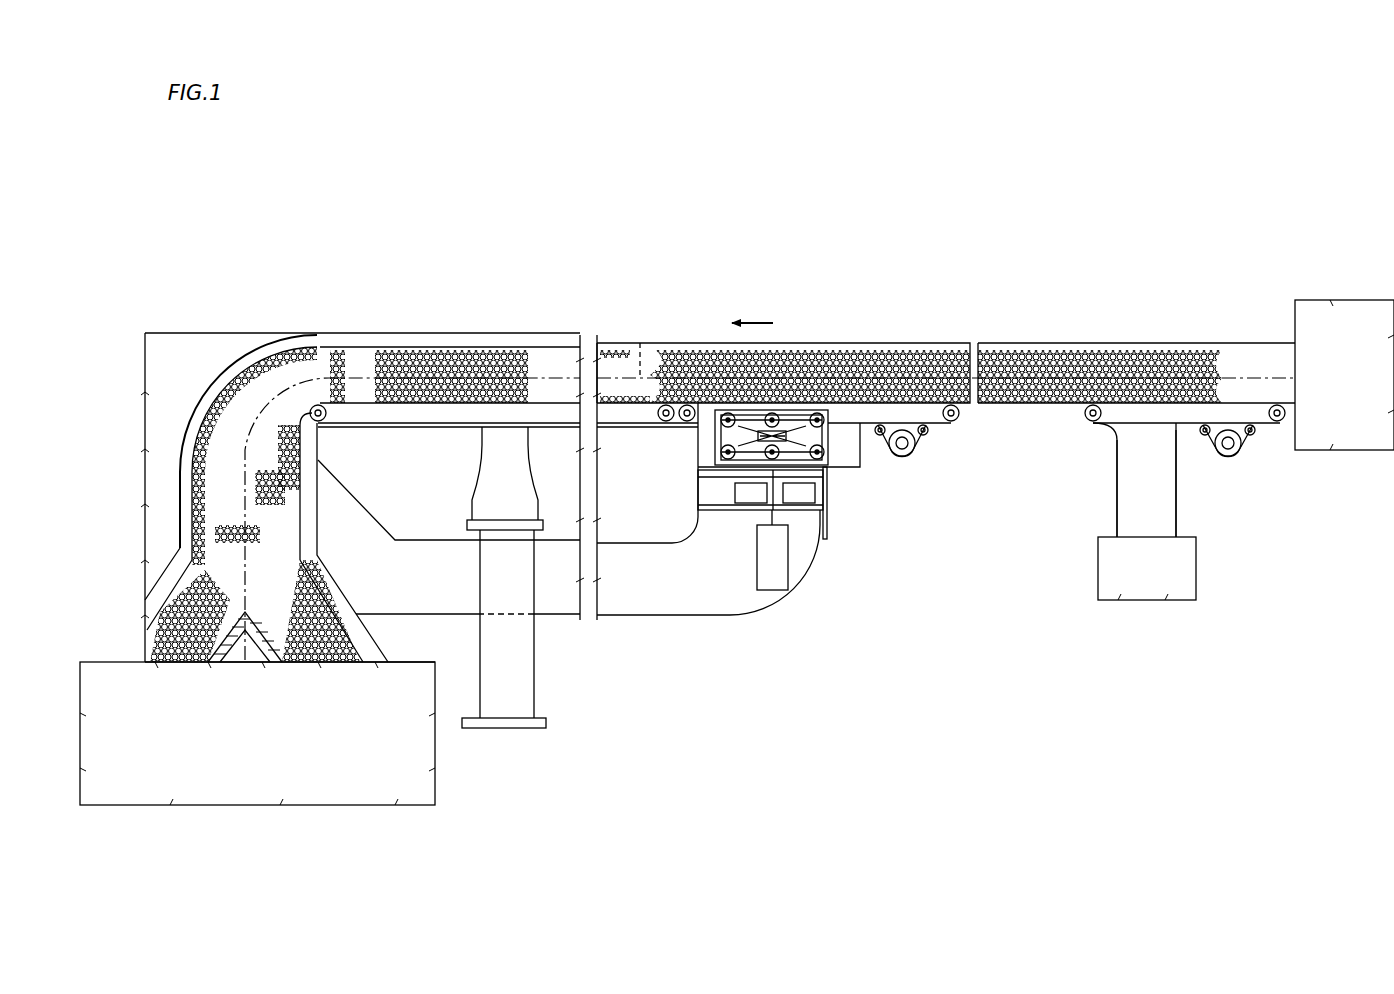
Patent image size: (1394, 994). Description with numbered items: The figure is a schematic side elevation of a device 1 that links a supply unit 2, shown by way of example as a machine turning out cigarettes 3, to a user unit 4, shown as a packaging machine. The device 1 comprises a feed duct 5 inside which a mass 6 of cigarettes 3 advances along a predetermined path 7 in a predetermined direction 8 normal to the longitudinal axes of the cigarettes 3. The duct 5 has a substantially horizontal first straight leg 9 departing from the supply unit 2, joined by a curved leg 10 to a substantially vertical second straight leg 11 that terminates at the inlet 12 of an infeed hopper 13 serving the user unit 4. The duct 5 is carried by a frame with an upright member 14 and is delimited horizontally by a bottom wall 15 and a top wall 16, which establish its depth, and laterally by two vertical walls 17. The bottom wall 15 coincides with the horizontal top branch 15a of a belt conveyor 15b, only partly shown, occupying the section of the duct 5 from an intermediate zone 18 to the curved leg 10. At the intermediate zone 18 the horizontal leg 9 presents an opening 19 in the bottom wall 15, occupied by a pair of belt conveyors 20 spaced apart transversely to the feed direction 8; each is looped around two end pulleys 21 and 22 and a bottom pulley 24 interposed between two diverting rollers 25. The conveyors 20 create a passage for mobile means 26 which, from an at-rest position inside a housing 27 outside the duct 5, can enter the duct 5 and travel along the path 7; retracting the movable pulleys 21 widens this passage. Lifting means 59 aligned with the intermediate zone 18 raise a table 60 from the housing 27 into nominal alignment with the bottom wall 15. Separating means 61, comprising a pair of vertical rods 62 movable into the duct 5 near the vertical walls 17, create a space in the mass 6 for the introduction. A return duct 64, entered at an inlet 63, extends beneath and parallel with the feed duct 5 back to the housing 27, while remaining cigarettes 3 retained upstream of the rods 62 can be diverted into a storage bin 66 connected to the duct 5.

The device 1 is at (735, 288).
The supply unit 2 is at (1335, 384).
The cigarettes 3 is at (850, 345).
The user unit 4 is at (238, 740).
The feed duct 5 is at (620, 338).
The mass of cigarettes 6 is at (443, 355).
The predetermined path 7 is at (640, 340).
The predetermined direction 8 is at (758, 323).
The first straight leg 9 is at (935, 338).
The curved leg 10 is at (186, 415).
The second straight leg 11 is at (176, 520).
The inlet 12 is at (205, 612).
The infeed hopper 13 is at (387, 655).
The upright member 14 is at (508, 708).
The bottom wall 15 is at (304, 538).
The horizontal top branch 15a is at (347, 352).
The belt conveyor 15b is at (390, 418).
The top wall 16 is at (317, 335).
The vertical walls 17 is at (544, 355).
The intermediate zone 18 is at (785, 343).
The opening 19 is at (708, 400).
The belt conveyors 20 is at (697, 428).
The end pulley 21 is at (682, 422).
The end pulley 22 is at (953, 422).
The bottom pulley 24 is at (903, 456).
The diverting rollers 25 is at (880, 437).
The mobile means 26 is at (730, 470).
The housing 27 is at (705, 455).
The lifting means 59 is at (766, 598).
The table 60 is at (803, 468).
The separating means 61 is at (829, 543).
The vertical rods 62 is at (828, 528).
The inlet 63 is at (200, 447).
The return duct 64 is at (558, 622).
The storage bin 66 is at (1134, 579).